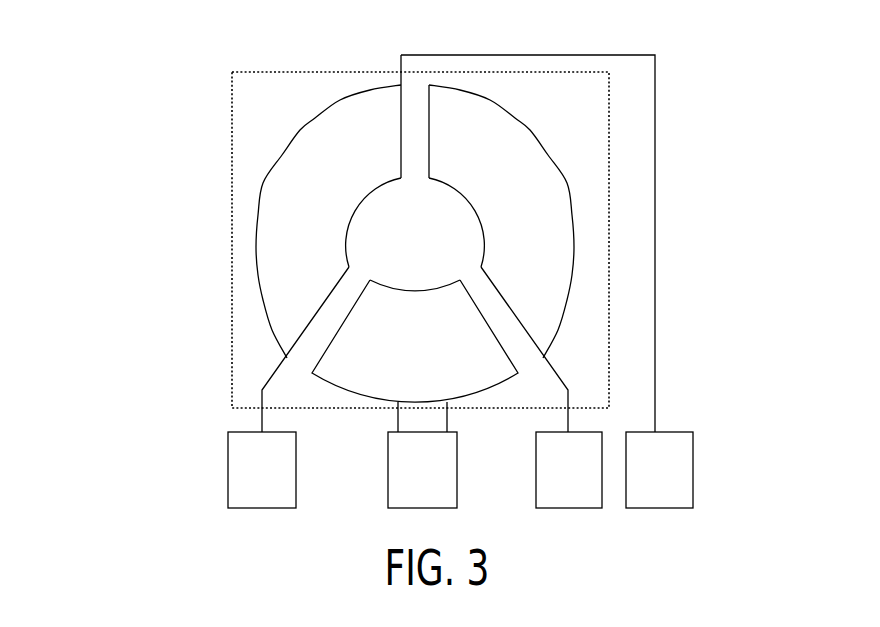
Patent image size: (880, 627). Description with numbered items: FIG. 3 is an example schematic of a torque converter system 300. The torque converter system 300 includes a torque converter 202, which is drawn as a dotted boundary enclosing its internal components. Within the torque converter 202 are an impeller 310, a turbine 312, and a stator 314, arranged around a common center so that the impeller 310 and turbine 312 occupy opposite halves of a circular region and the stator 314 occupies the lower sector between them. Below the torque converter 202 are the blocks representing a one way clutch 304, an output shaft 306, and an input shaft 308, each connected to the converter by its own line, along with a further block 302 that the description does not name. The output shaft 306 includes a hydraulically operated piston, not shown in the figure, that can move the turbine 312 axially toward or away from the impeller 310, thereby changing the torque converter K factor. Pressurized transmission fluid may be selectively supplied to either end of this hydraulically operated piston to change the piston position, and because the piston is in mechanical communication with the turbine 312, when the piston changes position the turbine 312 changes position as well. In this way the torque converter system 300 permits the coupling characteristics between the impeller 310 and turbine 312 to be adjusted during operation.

The torque converter 202 is at (232, 208).
The torque converter system 300 is at (672, 98).
The first drive/sense circuit 302 is at (242, 482).
The one way clutch 304 is at (402, 482).
The output shaft 306 is at (549, 482).
The input shaft 308 is at (640, 482).
The impeller 310 is at (292, 215).
The turbine 312 is at (495, 215).
The stator 314 is at (393, 355).